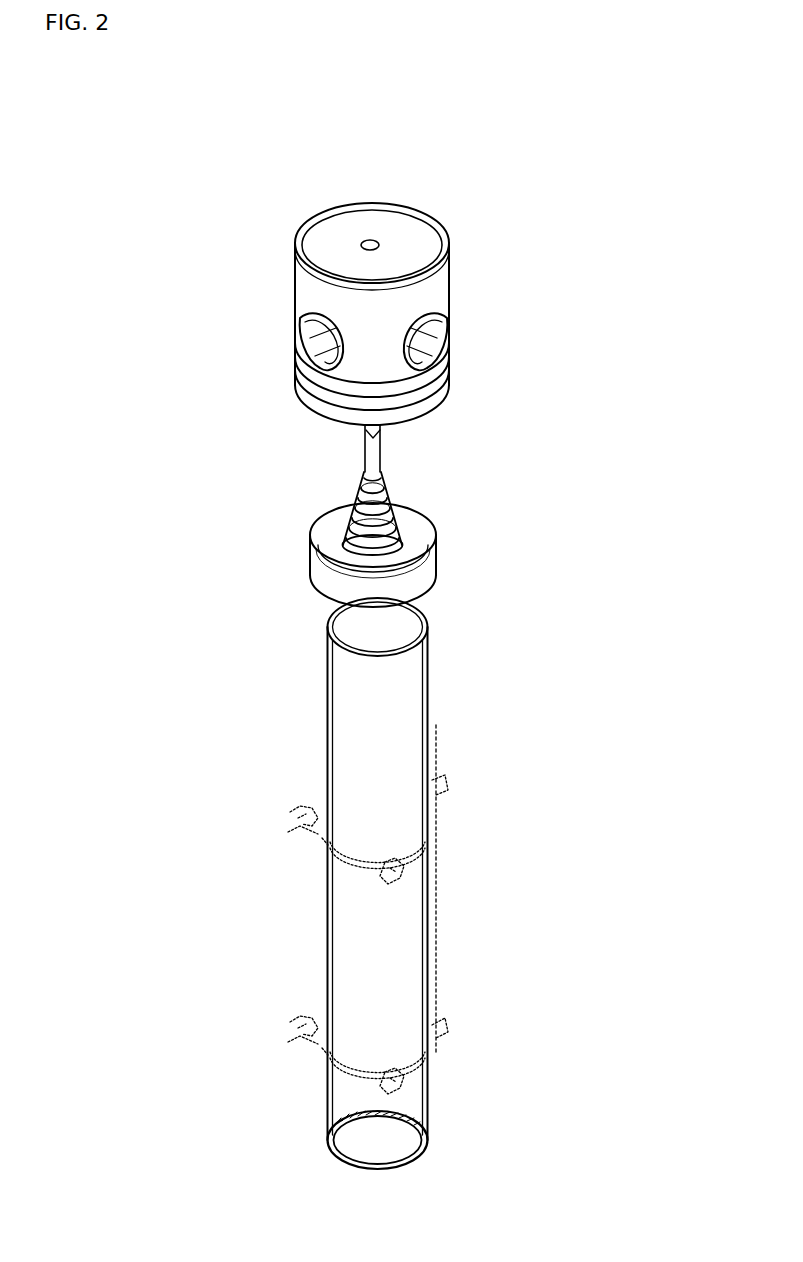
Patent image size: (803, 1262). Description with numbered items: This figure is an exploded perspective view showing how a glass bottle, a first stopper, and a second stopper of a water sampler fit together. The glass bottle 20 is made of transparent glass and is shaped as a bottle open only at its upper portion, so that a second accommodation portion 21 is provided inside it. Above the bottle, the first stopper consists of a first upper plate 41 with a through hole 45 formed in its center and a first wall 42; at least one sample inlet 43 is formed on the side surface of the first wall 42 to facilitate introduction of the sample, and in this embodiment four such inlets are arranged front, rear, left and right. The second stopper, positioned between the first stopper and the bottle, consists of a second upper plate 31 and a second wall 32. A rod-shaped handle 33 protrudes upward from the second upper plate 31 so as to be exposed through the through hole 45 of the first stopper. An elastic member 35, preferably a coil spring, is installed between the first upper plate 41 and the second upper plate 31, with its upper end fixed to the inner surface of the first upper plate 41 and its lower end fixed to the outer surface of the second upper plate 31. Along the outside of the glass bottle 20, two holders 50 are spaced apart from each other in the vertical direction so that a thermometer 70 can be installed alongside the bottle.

The glass bottle 20 is at (344, 883).
The second accommodation portion 21 is at (384, 952).
The second upper plate 31 is at (403, 540).
The second wall 32 is at (420, 578).
The handle 33 is at (365, 458).
The elastic member 35 is at (402, 520).
The first upper plate 41 is at (398, 276).
The first wall 42 is at (440, 290).
The sample inlet 43 is at (450, 345).
The through hole 45 is at (368, 243).
The holder 50 is at (335, 857).
The thermometer 70 is at (435, 905).